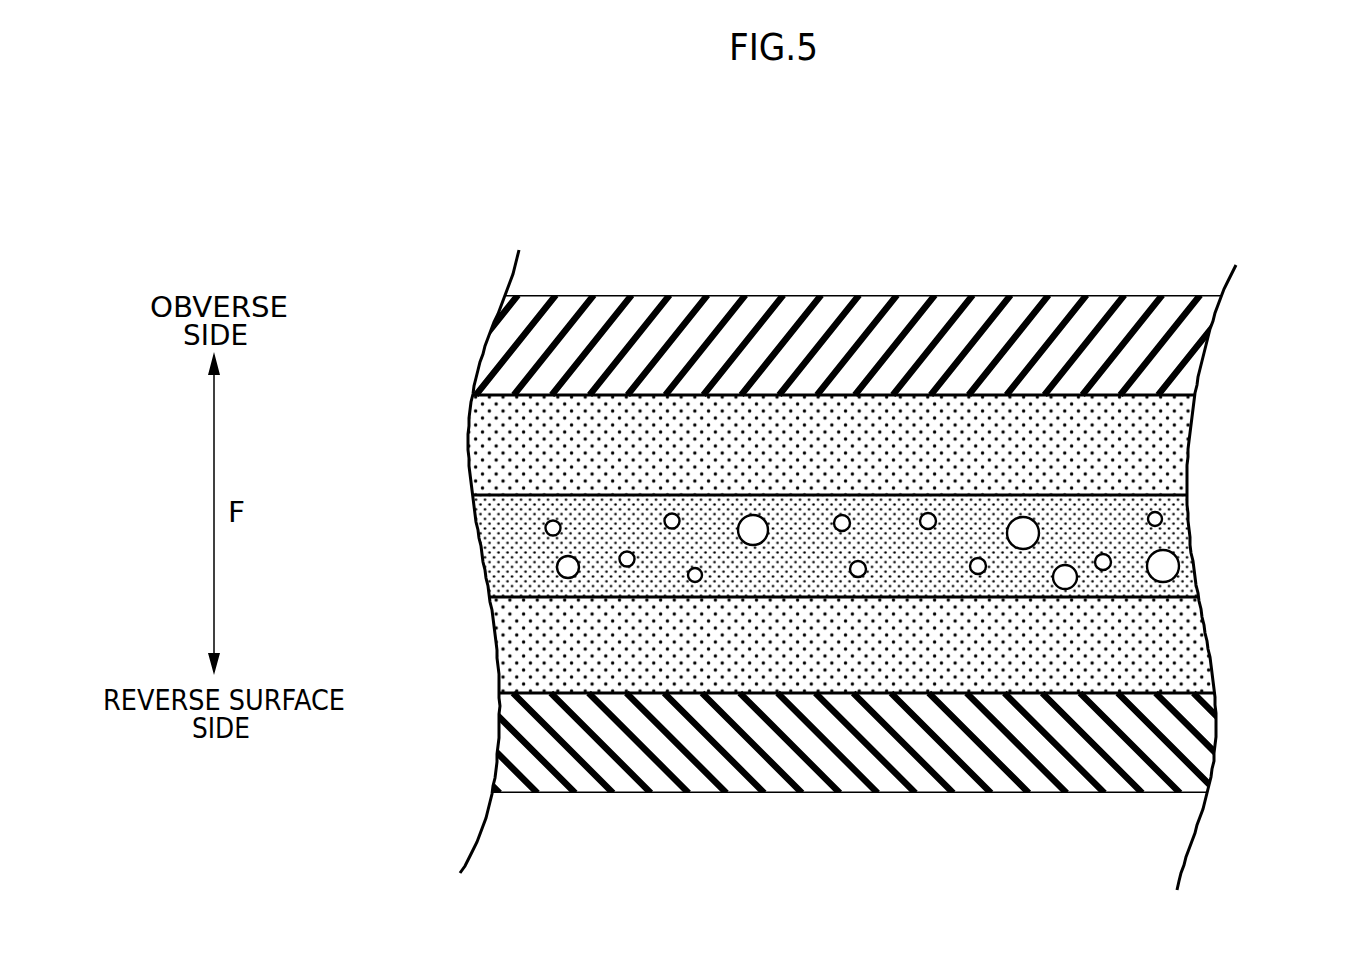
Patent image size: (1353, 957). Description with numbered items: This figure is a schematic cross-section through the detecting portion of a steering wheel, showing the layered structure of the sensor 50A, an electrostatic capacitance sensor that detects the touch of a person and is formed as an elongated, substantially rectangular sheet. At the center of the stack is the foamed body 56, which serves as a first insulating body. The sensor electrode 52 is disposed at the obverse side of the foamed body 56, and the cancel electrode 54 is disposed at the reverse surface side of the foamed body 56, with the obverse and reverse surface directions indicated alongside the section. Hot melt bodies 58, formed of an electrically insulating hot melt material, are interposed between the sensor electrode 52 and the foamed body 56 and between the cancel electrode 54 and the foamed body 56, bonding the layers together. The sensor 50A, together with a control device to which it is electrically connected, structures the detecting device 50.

The detecting device 50 is at (1089, 159).
The sensor 50A is at (929, 278).
The sensor electrode 52 is at (1170, 356).
The cancel electrode 54 is at (1170, 741).
The foamed body 56 is at (1170, 534).
The hot melt body 58 is at (1170, 446).